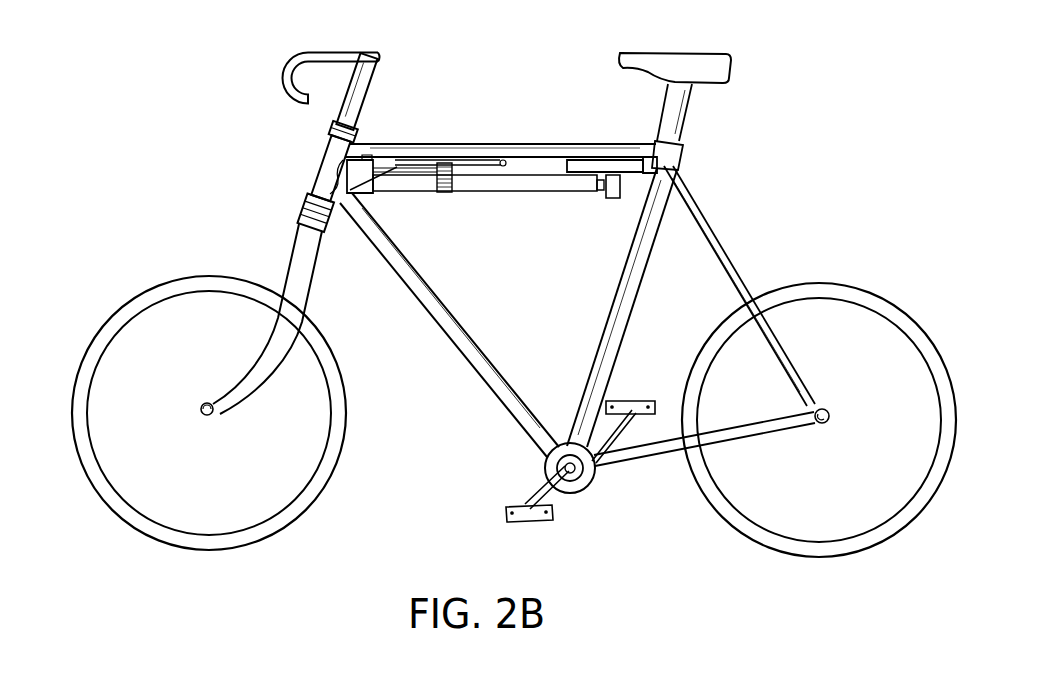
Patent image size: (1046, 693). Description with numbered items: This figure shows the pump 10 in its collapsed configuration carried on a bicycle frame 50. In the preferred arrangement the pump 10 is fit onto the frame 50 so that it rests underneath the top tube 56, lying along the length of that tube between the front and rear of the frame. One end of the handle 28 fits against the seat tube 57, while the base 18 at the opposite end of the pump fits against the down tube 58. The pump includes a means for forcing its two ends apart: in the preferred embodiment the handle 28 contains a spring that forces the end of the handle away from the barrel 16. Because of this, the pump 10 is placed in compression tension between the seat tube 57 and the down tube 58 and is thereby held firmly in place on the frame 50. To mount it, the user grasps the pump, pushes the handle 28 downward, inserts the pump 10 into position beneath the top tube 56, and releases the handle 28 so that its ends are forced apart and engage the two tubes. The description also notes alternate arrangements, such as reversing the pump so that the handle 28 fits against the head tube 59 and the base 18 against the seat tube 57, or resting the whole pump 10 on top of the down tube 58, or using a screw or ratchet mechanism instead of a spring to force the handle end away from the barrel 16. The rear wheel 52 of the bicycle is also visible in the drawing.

The pump 10 is at (498, 224).
The barrel 16 is at (541, 188).
The base 18 is at (367, 190).
The handle 28 is at (603, 168).
The frame 50 is at (758, 204).
The rear wheel 52 is at (844, 292).
The top tube 56 is at (490, 150).
The seat tube 57 is at (634, 283).
The down tube 58 is at (463, 360).
The head tube 59 is at (313, 165).